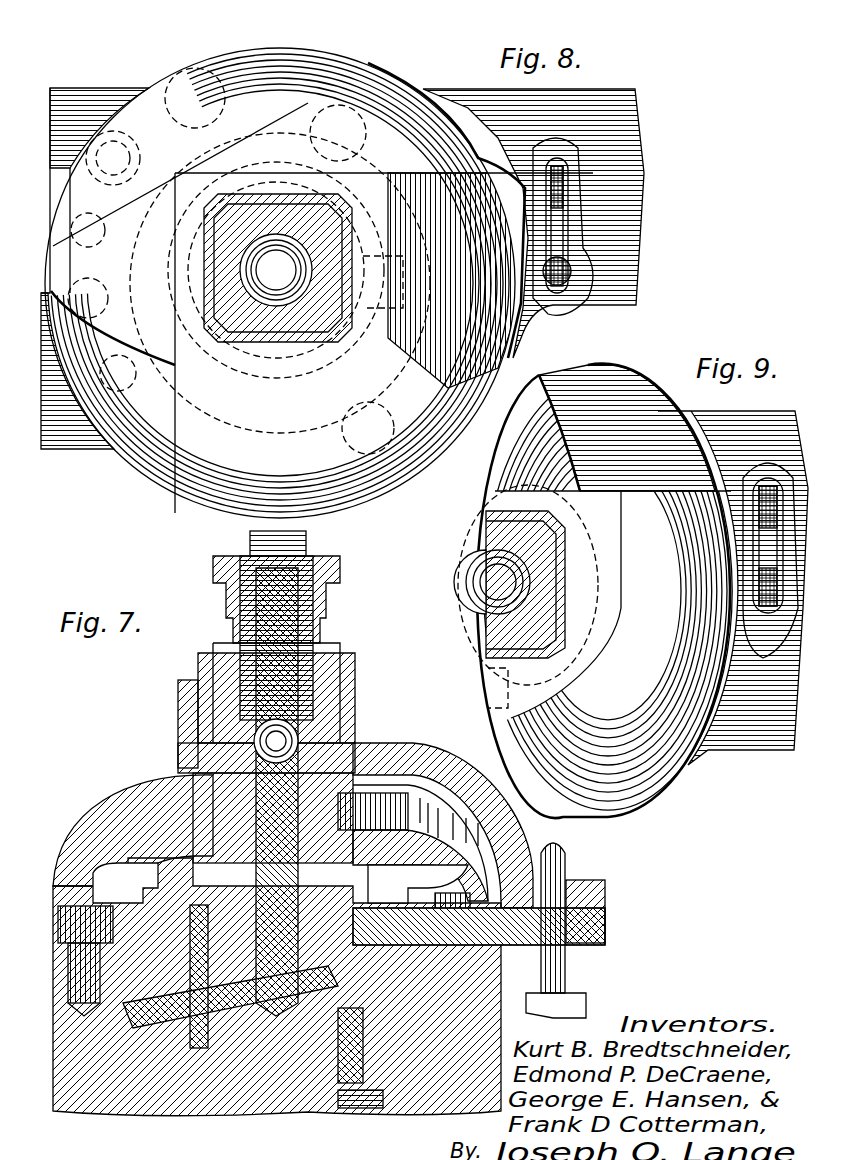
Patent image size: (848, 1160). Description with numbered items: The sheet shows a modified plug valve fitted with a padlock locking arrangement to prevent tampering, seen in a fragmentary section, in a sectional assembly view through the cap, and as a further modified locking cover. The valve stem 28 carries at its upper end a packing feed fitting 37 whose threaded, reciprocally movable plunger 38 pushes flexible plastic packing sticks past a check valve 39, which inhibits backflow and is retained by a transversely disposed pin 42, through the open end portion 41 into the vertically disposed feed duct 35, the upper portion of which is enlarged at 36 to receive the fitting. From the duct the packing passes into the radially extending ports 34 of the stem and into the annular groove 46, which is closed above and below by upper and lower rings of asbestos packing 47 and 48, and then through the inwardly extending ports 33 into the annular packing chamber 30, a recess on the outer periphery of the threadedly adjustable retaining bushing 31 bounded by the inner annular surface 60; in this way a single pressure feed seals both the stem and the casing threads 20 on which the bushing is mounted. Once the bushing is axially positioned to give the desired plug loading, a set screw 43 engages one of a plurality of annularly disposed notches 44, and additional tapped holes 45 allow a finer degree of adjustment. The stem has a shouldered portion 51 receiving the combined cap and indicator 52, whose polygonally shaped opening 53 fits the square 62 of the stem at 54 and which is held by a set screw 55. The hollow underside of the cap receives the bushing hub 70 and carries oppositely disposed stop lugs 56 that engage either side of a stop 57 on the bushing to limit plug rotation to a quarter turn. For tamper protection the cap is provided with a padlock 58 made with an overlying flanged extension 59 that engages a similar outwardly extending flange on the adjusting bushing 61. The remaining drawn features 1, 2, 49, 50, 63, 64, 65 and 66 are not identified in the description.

In FIG. 9, the valve assembly 1 is at (735, 752).
In FIG. 8, the housing 2 is at (342, 268).
In FIG. 9, the housing 2 is at (790, 425).
In FIG. 7, the casing threads 20 is at (425, 972).
In FIG. 7, the valve stem 28 is at (391, 1065).
In FIG. 7, the packing chamber 30 is at (415, 1040).
In FIG. 7, the adjustable retaining bushing 31 is at (120, 890).
In FIG. 7, the inwardly extending ports 33 is at (142, 985).
In FIG. 7, the radially extending ports 34 is at (213, 976).
In FIG. 7, the feed duct 35 is at (262, 872).
In FIG. 8, the enlarged upper portion 36 is at (248, 282).
In FIG. 7, the enlarged upper portion 36 is at (240, 712).
In FIG. 8, the packing feed fitting 37 is at (250, 234).
In FIG. 9, the packing feed fitting 37 is at (478, 545).
In FIG. 7, the packing feed fitting 37 is at (318, 598).
In FIG. 7, the plunger 38 is at (298, 545).
In FIG. 8, the check valve 39 is at (282, 240).
In FIG. 9, the check valve 39 is at (465, 572).
In FIG. 7, the check valve 39 is at (290, 738).
In FIG. 7, the open end portion 41 is at (316, 832).
In FIG. 7, the pin 42 is at (200, 760).
In FIG. 8, the set screw 43 is at (100, 105).
In FIG. 7, the set screw 43 is at (50, 908).
In FIG. 8, the notches 44 is at (231, 261).
In FIG. 7, the notches 44 is at (95, 860).
In FIG. 8, the tapped holes 45 is at (98, 360).
In FIG. 7, the tapped holes 45 is at (55, 955).
In FIG. 7, the annular groove 46 is at (352, 1050).
In FIG. 7, the upper asbestos packing ring 47 is at (272, 925).
In FIG. 7, the lower asbestos packing ring 48 is at (307, 1037).
In FIG. 7, the seat 49 is at (150, 860).
In FIG. 7, the plug 50 is at (365, 1100).
In FIG. 7, the shouldered portion 51 is at (194, 832).
In FIG. 8, the combined cap and indicator 52 is at (203, 43).
In FIG. 9, the combined cap and indicator 52 is at (568, 405).
In FIG. 7, the combined cap and indicator 52 is at (70, 804).
In FIG. 7, the polygonally shaped opening 53 is at (205, 800).
In FIG. 8, the square receiving location 54 is at (330, 300).
In FIG. 9, the square receiving location 54 is at (560, 582).
In FIG. 7, the square receiving location 54 is at (353, 745).
In FIG. 8, the set screw 55 is at (366, 246).
In FIG. 9, the set screw 55 is at (497, 668).
In FIG. 7, the set screw 55 is at (392, 805).
In FIG. 8, the stop lugs 56 is at (362, 60).
In FIG. 9, the stop lugs 56 is at (562, 372).
In FIG. 8, the stop 57 is at (413, 84).
In FIG. 9, the stop 57 is at (652, 760).
In FIG. 7, the stop 57 is at (479, 926).
In FIG. 8, the padlock 58 is at (550, 150).
In FIG. 9, the padlock 58 is at (755, 470).
In FIG. 7, the padlock 58 is at (557, 848).
In FIG. 8, the flanged extension 59 is at (585, 232).
In FIG. 9, the flanged extension 59 is at (786, 620).
In FIG. 7, the flanged extension 59 is at (597, 892).
In FIG. 7, the inner annular surface 60 is at (365, 958).
In FIG. 7, the adjusting bushing 61 is at (597, 920).
In FIG. 8, the stem square 62 is at (215, 230).
In FIG. 9, the stem square 62 is at (478, 628).
In FIG. 7, the stem square 62 is at (320, 632).
In FIG. 8, the outer sleeve 63 is at (200, 212).
In FIG. 9, the outer sleeve 63 is at (480, 508).
In FIG. 7, the outer sleeve 63 is at (347, 680).
In FIG. 8, the cap flange 64 is at (395, 160).
In FIG. 9, the cap flange 64 is at (683, 470).
In FIG. 7, the cap flange 64 is at (428, 724).
In FIG. 7, the bolt head 65 is at (580, 965).
In FIG. 8, the bolt shank 66 is at (565, 258).
In FIG. 9, the bolt shank 66 is at (757, 612).
In FIG. 7, the bolt shank 66 is at (556, 866).
In FIG. 7, the bushing hub 70 is at (418, 884).